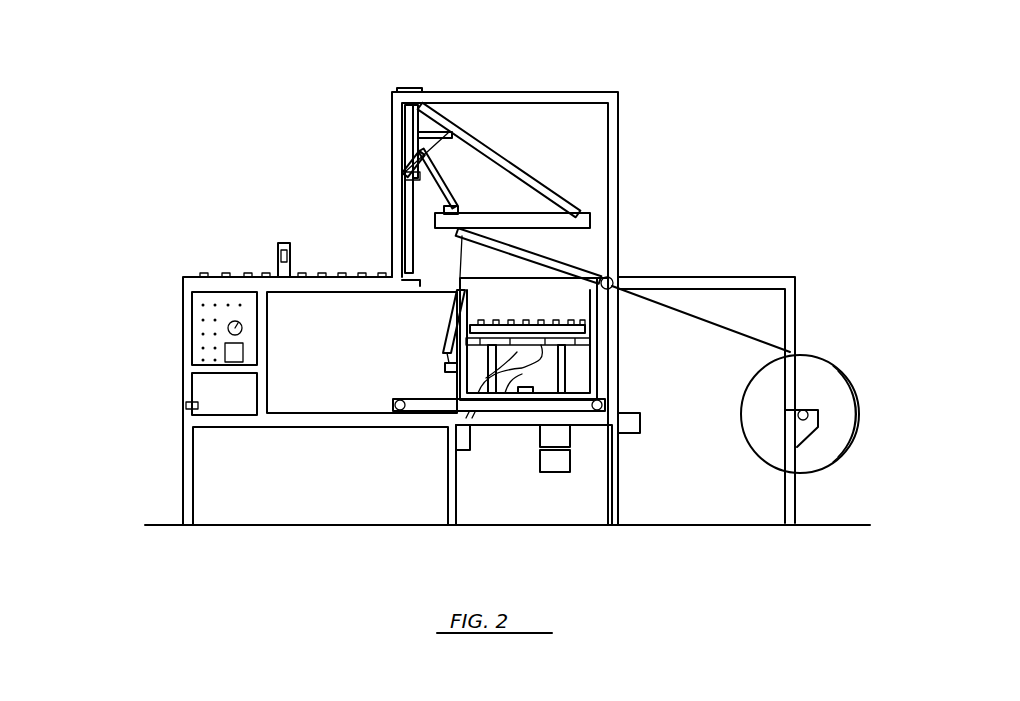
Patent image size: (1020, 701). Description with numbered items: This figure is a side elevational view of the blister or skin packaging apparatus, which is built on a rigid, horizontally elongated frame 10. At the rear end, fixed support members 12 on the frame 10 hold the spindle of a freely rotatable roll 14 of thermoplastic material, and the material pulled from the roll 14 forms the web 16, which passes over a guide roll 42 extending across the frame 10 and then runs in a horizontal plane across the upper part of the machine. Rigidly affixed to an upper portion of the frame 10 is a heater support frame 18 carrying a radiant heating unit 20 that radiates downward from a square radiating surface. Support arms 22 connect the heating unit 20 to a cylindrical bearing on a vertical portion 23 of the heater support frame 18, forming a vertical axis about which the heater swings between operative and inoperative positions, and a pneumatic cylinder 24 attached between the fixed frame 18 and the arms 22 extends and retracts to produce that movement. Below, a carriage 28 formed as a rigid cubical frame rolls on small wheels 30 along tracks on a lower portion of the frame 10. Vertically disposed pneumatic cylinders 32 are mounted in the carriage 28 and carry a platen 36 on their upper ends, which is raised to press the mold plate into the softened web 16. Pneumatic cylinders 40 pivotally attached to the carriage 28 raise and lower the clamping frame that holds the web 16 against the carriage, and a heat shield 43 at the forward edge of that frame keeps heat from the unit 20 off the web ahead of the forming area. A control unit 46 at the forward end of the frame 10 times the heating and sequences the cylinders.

The frame 10 is at (345, 428).
The fixed support members 12 is at (800, 316).
The roll 14 is at (843, 368).
The web 16 is at (745, 333).
The heater support frame 18 is at (531, 92).
The radiant heating unit 20 is at (560, 229).
The support arms 22 is at (507, 165).
The vertical portion 23 is at (412, 225).
The pneumatic cylinder 24 is at (408, 170).
The carriage 28 is at (458, 378).
The wheels 30 is at (395, 403).
The pneumatic cylinders 32 is at (516, 368).
The platen 36 is at (578, 333).
The pneumatic cylinders 40 is at (452, 338).
The guide roll 42 is at (618, 292).
The heat shield 43 is at (462, 230).
The control unit 46 is at (180, 343).